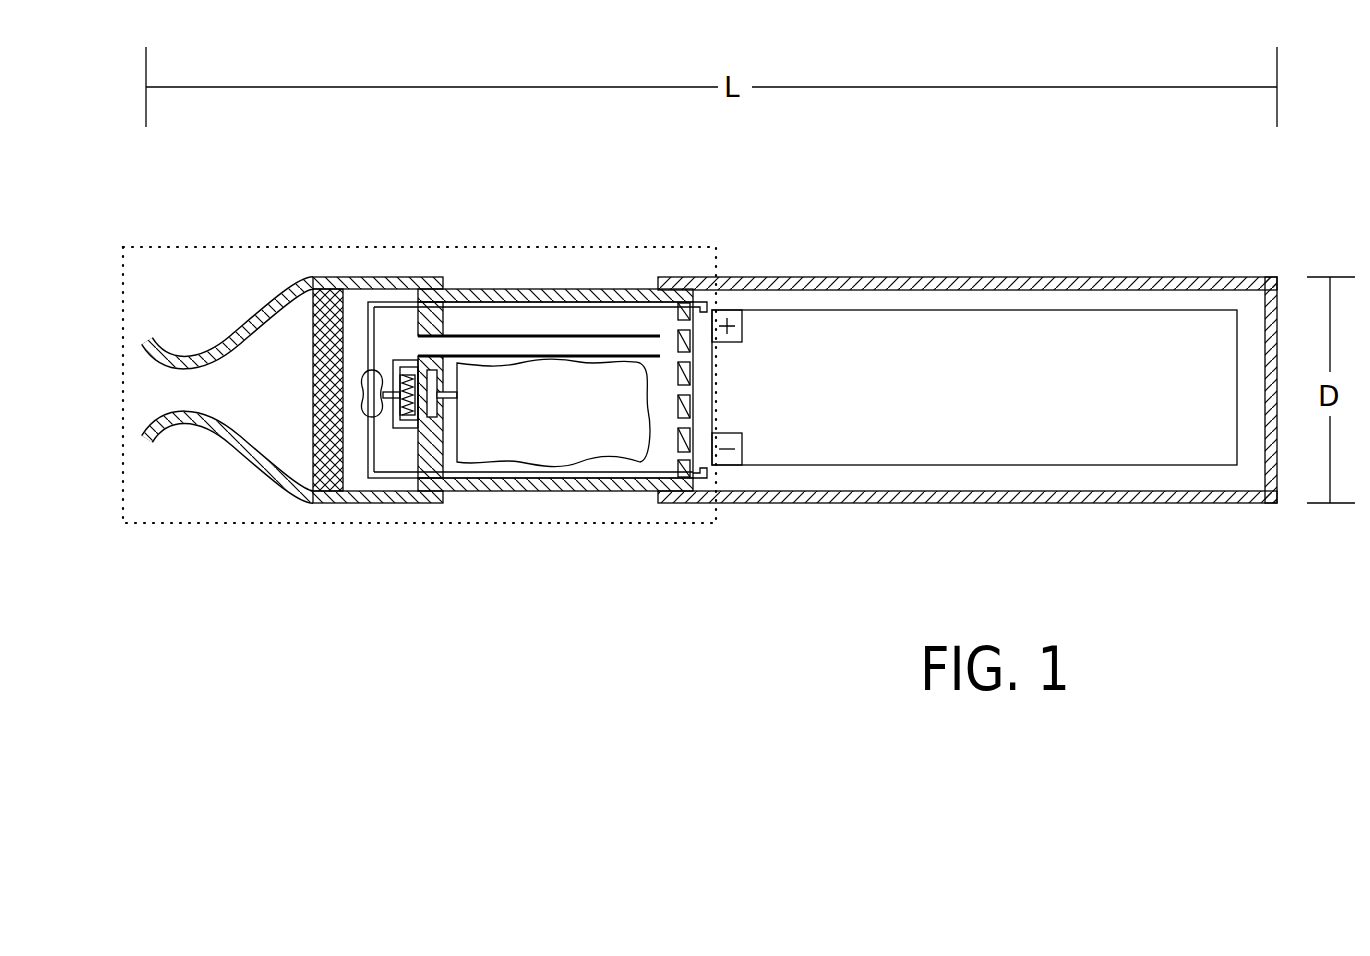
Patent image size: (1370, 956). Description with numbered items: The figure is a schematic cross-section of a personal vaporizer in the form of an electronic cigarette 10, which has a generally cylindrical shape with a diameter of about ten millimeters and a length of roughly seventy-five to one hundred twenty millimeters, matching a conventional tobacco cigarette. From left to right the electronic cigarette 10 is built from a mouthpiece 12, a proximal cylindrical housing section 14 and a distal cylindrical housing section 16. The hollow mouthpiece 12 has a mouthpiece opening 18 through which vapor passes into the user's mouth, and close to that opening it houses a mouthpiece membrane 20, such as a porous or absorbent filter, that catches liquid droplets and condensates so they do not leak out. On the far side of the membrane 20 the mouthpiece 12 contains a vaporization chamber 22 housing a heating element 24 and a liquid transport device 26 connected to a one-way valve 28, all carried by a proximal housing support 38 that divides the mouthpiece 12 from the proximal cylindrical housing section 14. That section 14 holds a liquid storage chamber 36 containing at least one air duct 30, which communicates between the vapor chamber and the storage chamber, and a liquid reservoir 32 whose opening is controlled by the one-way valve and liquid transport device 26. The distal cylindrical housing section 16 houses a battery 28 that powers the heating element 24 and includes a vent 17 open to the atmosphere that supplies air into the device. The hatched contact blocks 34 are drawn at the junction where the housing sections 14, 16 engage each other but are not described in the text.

The electronic cigarette 10 is at (795, 634).
The mouthpiece 12 is at (268, 483).
The proximal cylindrical housing section 14 is at (490, 487).
The distal cylindrical housing section 16 is at (1017, 497).
The vent 17 is at (710, 292).
The mouthpiece opening 18 is at (170, 389).
The mouthpiece membrane 20 is at (327, 310).
The vaporization chamber 22 is at (350, 480).
The heating element 24 is at (369, 418).
The liquid transport device 26 is at (394, 428).
The battery 28 is at (1127, 442).
The air duct 30 is at (521, 335).
The liquid reservoir 32 is at (553, 410).
The electrical contacts 34 is at (690, 305).
The liquid storage chamber 36 is at (615, 322).
The proximal housing support 38 is at (430, 325).